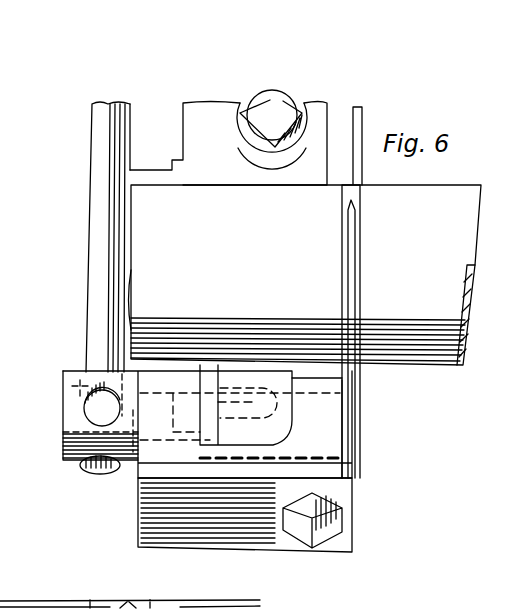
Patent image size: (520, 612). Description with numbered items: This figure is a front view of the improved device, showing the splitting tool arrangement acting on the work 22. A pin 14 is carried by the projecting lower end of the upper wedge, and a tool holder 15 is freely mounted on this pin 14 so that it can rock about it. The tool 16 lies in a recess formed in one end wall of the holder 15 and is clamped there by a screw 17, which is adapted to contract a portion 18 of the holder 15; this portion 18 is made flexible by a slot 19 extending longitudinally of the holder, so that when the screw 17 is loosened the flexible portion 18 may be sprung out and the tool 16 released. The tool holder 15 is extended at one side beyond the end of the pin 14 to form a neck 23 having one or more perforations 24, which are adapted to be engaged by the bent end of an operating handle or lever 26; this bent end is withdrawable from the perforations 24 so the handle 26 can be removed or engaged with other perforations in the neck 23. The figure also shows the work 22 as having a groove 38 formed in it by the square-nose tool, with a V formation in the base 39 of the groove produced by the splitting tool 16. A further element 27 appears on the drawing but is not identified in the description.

The frame 14 is at (352, 424).
The plate 15 is at (155, 455).
The roller 16 is at (347, 343).
The nut 17 is at (310, 532).
The base 18 is at (230, 532).
The base top surface 19 is at (277, 468).
The block 22 is at (222, 188).
The pin 23 is at (63, 445).
The bearing block 24 is at (82, 410).
The guide bars 26 is at (96, 325).
The guide 27 is at (7, 288).
The shaft 38 is at (353, 190).
The rod 39 is at (347, 245).